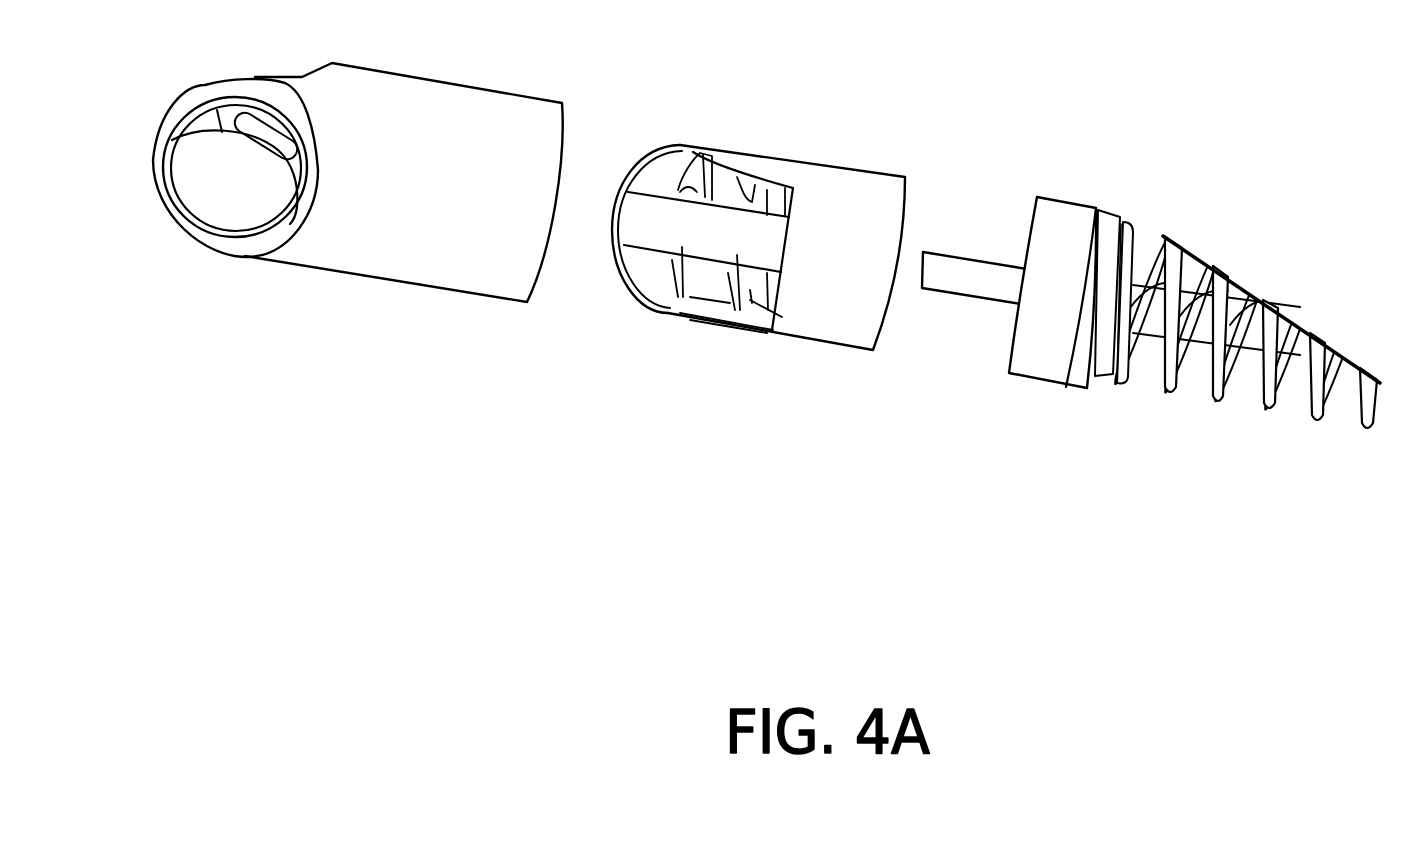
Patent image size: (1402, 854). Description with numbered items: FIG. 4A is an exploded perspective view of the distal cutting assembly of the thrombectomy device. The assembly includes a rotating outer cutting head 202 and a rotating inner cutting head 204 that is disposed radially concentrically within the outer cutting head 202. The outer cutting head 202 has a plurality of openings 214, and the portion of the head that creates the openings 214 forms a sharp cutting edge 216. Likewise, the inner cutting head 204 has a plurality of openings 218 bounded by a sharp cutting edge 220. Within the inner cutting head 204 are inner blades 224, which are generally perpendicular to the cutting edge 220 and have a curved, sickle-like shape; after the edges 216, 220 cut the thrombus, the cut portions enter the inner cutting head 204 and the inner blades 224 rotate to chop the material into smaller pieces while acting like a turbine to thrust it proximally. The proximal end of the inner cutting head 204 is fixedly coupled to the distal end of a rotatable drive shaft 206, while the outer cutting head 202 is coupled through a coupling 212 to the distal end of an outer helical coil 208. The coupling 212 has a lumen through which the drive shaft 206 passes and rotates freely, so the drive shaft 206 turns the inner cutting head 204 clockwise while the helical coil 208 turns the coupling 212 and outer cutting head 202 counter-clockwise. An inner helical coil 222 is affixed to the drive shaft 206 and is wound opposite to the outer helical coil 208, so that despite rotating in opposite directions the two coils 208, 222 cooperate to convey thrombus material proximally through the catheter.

The outer cutting head 202 is at (380, 93).
The inner cutting head 204 is at (875, 188).
The rotatable drive shaft 206 is at (987, 272).
The helical coil 208 is at (1267, 405).
The coupling 212 is at (1040, 358).
The openings 214 is at (249, 222).
The sharp cutting edge 216 is at (211, 217).
The openings 218 is at (648, 272).
The sharp cutting edge 220 is at (690, 142).
The helical coil 222 is at (1143, 367).
The inner blades 224 is at (685, 250).